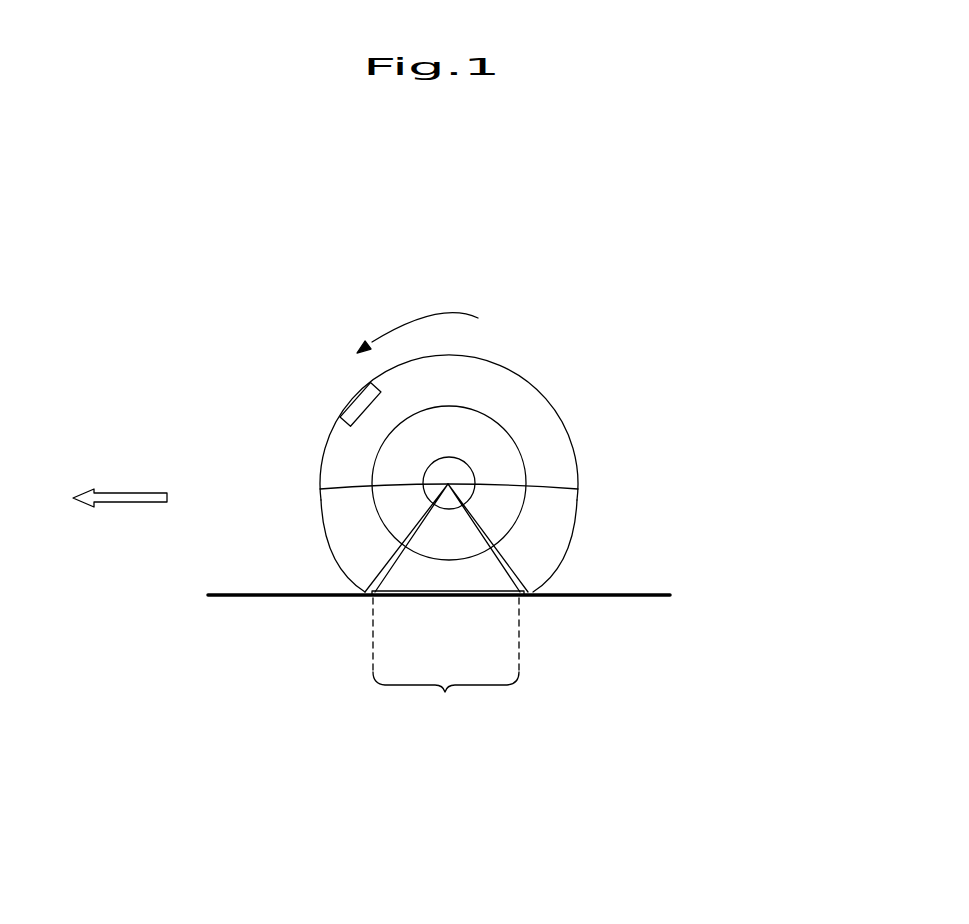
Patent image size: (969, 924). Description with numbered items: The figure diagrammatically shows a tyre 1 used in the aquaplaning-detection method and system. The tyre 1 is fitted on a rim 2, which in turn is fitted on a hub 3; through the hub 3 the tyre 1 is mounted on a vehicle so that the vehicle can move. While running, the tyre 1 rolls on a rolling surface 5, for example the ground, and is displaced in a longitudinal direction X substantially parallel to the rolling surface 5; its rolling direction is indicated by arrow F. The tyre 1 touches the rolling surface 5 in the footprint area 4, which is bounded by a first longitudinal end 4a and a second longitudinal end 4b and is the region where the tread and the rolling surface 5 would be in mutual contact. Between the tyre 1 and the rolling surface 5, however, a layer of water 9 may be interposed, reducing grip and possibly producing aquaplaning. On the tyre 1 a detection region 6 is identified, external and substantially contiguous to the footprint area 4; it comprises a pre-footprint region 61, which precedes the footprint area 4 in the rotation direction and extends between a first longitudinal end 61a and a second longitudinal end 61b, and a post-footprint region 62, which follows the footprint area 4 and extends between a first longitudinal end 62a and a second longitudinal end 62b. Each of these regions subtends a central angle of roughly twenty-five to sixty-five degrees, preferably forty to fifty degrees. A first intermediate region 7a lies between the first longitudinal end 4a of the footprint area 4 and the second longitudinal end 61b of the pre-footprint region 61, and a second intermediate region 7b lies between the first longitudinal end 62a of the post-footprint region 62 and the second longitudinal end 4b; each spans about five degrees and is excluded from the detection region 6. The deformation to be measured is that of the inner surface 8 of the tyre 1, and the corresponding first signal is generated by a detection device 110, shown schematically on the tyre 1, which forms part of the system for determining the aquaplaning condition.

The tyre 1 is at (533, 380).
The rim 2 is at (520, 445).
The hub 3 is at (452, 467).
The footprint area 4 is at (446, 660).
The first longitudinal end of the footprint area 4a is at (372, 597).
The second longitudinal end of the footprint area 4b is at (520, 597).
The rolling surface 5 is at (223, 594).
The detection region 6 is at (306, 503).
The pre-footprint region 61 is at (331, 535).
The first longitudinal end of the pre-footprint region 61a is at (316, 486).
The second longitudinal end of the pre-footprint region 61b is at (337, 591).
The post-footprint region 62 is at (563, 548).
The first longitudinal end of the post-footprint region 62a is at (523, 586).
The second longitudinal end of the post-footprint region 62b is at (592, 489).
The first intermediate region 7a is at (380, 572).
The second intermediate region 7b is at (516, 575).
The inner surface 8 is at (333, 440).
The layer of water 9 is at (409, 593).
The detection device 110 is at (348, 399).
The arrow indicating rolling direction F is at (433, 313).
The longitudinal direction X is at (115, 493).